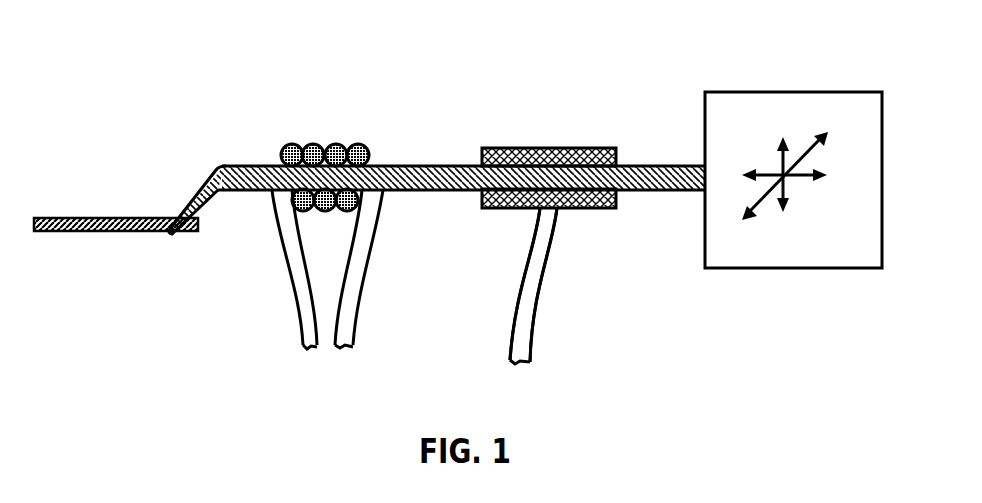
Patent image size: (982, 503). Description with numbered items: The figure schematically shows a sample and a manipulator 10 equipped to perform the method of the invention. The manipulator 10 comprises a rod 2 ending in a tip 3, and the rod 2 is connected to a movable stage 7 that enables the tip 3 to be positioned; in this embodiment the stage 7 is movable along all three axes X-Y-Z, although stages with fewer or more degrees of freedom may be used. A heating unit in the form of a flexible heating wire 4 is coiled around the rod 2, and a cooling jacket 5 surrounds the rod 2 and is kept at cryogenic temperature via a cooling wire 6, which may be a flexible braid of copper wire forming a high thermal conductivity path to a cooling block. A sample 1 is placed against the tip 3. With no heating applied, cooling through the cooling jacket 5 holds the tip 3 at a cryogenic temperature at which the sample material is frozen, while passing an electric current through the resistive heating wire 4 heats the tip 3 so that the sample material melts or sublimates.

The sample 1 is at (82, 220).
The rod 2 is at (435, 175).
The tip 3 is at (194, 196).
The heating wire 4 is at (310, 150).
The cooling jacket 5 is at (542, 150).
The cooling wire 6 is at (525, 290).
The movable stage 7 is at (762, 268).
The manipulator 10 is at (651, 94).